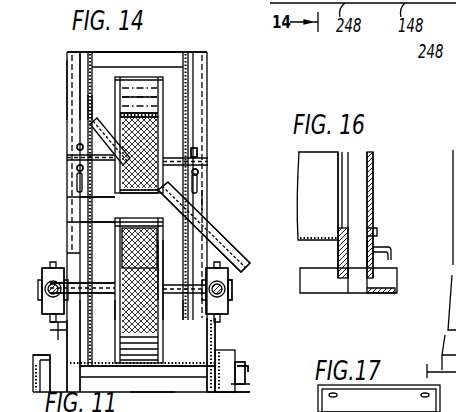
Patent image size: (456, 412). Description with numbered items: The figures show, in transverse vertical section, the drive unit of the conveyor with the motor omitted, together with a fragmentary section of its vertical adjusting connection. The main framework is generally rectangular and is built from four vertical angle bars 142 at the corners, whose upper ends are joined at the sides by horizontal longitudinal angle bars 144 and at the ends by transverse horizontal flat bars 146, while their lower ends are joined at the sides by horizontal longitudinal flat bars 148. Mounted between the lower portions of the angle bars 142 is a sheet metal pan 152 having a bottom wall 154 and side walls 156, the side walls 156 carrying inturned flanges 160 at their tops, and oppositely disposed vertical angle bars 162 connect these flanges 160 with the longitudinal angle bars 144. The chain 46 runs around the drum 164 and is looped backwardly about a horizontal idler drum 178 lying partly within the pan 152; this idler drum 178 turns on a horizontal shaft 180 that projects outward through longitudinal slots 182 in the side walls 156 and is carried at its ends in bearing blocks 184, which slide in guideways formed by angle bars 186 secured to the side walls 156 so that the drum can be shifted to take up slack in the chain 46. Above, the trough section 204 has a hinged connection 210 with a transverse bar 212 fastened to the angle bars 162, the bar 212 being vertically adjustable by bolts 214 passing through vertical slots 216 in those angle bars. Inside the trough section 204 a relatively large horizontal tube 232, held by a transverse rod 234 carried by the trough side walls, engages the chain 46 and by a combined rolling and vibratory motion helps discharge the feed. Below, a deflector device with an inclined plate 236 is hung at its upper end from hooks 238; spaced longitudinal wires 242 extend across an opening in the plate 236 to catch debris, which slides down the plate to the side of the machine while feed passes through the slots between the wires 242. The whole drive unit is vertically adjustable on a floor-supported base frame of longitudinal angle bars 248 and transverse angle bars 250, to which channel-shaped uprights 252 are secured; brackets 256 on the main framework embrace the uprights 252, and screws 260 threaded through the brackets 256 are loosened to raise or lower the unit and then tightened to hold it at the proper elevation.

In FIG. 14, the chain 46 is at (125, 244).
In FIG. 14, the vertical angle bars 142 is at (60, 44).
In FIG. 14, the horizontal longitudinal angle bars 144 is at (90, 52).
In FIG. 14, the transverse horizontal flat bars 146 is at (148, 52).
In FIG. 14, the horizontal longitudinal flat bars 148 is at (236, 353).
In FIG. 16, the horizontal longitudinal flat bars 148 is at (350, 230).
In FIG. 14, the sheet metal pan 152 is at (212, 340).
In FIG. 14, the bottom wall 154 is at (172, 368).
In FIG. 14, the side walls 156 is at (205, 345).
In FIG. 14, the inturned flanges 160 is at (181, 258).
In FIG. 14, the vertical angle bars 162 is at (216, 89).
In FIG. 14, the drum 164 is at (115, 197).
In FIG. 14, the horizontal idler drum 178 is at (115, 222).
In FIG. 14, the horizontal shaft 180 is at (80, 293).
In FIG. 14, the longitudinal slots 182 is at (200, 305).
In FIG. 14, the bearing blocks 184 is at (232, 277).
In FIG. 14, the angle bars 186 is at (58, 228).
In FIG. 14, the trough section 204 is at (118, 195).
In FIG. 14, the hinged connection 210 is at (198, 151).
In FIG. 14, the transverse bar 212 is at (200, 172).
In FIG. 14, the bolts 214 is at (223, 184).
In FIG. 14, the vertical slots 216 is at (223, 156).
In FIG. 14, the horizontal tube 232 is at (160, 124).
In FIG. 14, the transverse rod 234 is at (150, 110).
In FIG. 14, the inclined plate 236 is at (204, 232).
In FIG. 14, the hooks 238 is at (92, 107).
In FIG. 14, the longitudinal wires 242 is at (204, 199).
In FIG. 14, the longitudinal angle bars 248 is at (232, 396).
In FIG. 16, the longitudinal angle bars 248 is at (452, 340).
In FIG. 14, the transverse angle bars 250 is at (150, 386).
In FIG. 16, the transverse angle bars 250 is at (328, 285).
In FIG. 14, the uprights 252 is at (256, 313).
In FIG. 16, the uprights 252 is at (370, 183).
In FIG. 14, the brackets 256 is at (245, 382).
In FIG. 16, the brackets 256 is at (376, 233).
In FIG. 14, the screws 260 is at (245, 371).
In FIG. 16, the screws 260 is at (392, 253).